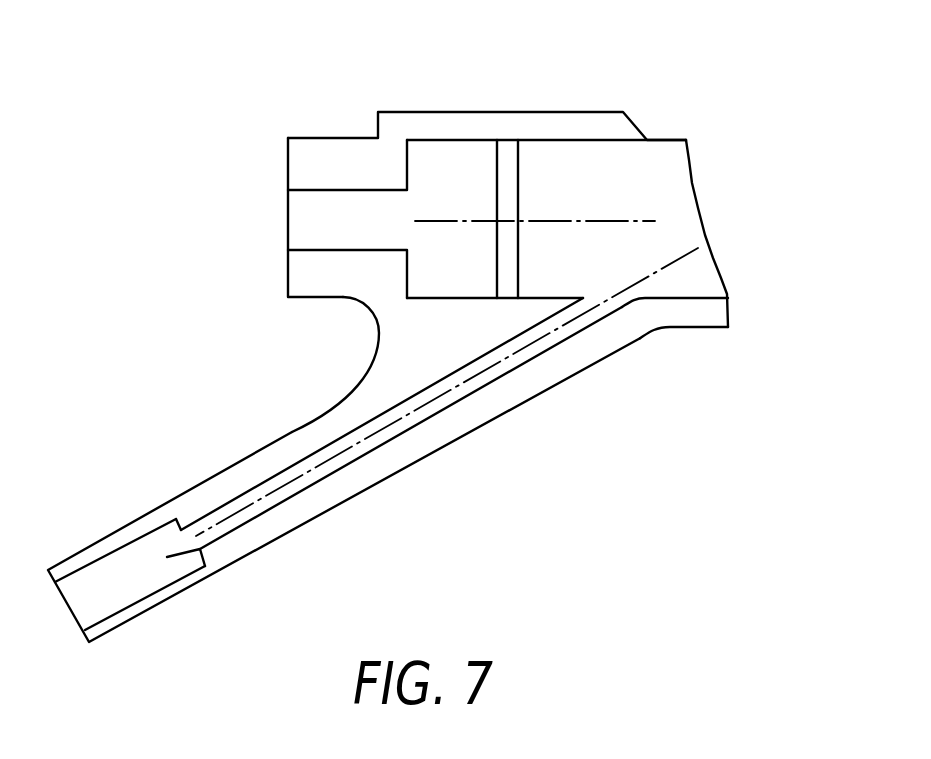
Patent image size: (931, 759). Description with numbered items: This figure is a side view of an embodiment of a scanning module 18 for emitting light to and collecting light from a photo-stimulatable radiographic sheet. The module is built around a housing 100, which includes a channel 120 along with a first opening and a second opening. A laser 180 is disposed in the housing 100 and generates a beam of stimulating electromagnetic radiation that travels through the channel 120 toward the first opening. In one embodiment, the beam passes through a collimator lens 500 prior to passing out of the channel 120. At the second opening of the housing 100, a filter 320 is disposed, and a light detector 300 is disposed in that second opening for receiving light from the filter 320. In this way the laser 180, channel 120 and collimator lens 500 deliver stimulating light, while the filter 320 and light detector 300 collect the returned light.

The scanning module 18 is at (677, 435).
The housing 100 is at (528, 112).
The channel 120 is at (337, 471).
The laser 180 is at (145, 601).
The light detector 300 is at (432, 150).
The filter 320 is at (493, 163).
The collimator lens 500 is at (240, 500).